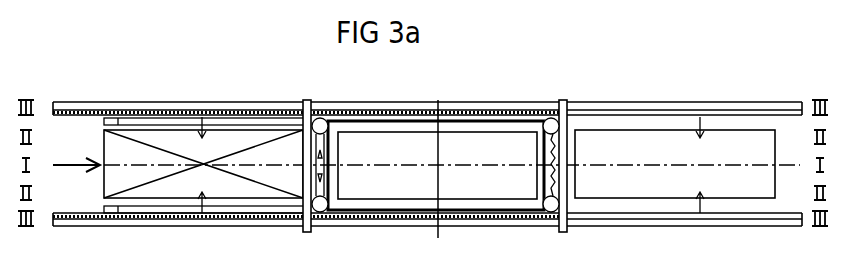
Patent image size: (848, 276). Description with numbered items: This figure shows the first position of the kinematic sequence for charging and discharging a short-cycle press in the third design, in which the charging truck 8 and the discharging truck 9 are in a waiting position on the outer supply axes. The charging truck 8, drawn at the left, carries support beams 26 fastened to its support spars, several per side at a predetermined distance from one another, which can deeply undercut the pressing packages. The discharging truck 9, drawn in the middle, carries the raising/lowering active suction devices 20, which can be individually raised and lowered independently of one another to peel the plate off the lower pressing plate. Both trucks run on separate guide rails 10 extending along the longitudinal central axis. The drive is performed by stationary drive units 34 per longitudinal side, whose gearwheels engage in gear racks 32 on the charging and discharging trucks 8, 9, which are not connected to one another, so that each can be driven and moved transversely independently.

The charging truck 8 is at (243, 250).
The discharging truck 9 is at (378, 250).
The guide rail 10 is at (623, 250).
The active suction device 20 is at (415, 250).
The support beam 26 is at (112, 250).
The gear rack 32 is at (461, 250).
The drive unit 34 is at (571, 248).